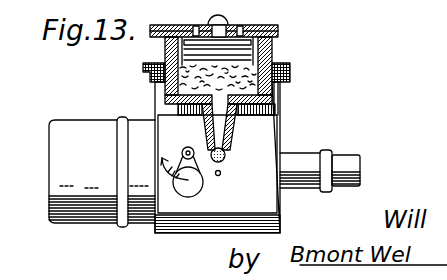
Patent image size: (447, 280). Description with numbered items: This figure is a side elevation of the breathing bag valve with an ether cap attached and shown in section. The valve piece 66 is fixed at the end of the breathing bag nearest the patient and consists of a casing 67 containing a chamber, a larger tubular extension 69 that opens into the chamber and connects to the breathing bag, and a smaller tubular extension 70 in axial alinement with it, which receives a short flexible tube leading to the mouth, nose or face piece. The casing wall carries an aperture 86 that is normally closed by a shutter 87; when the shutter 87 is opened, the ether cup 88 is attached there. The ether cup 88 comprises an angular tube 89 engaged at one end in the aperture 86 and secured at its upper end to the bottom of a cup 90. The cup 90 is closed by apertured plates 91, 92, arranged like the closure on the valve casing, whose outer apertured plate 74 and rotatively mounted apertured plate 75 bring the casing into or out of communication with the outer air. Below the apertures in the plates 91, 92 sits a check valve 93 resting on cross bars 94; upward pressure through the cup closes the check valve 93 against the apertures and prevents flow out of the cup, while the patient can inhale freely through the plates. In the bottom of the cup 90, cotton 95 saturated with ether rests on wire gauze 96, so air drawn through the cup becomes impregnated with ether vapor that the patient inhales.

The valve piece 66 is at (197, 240).
The casing 67 is at (217, 157).
The tubular extension 69 is at (102, 172).
The smaller tubular extension 70 is at (320, 160).
The outer apertured plate 74 is at (290, 77).
The apertured plate 75 is at (254, 58).
The aperture 86 is at (235, 161).
The shutter 87 is at (203, 190).
The ether cup 88 is at (280, 93).
The angular tube 89 is at (278, 132).
The cup 90 is at (274, 40).
The apertured plate 91 is at (278, 30).
The apertured plate 92 is at (270, 24).
The check valve 93 is at (167, 50).
The cross bars 94 is at (150, 77).
The cotton 95 is at (167, 94).
The wire gauze 96 is at (203, 112).